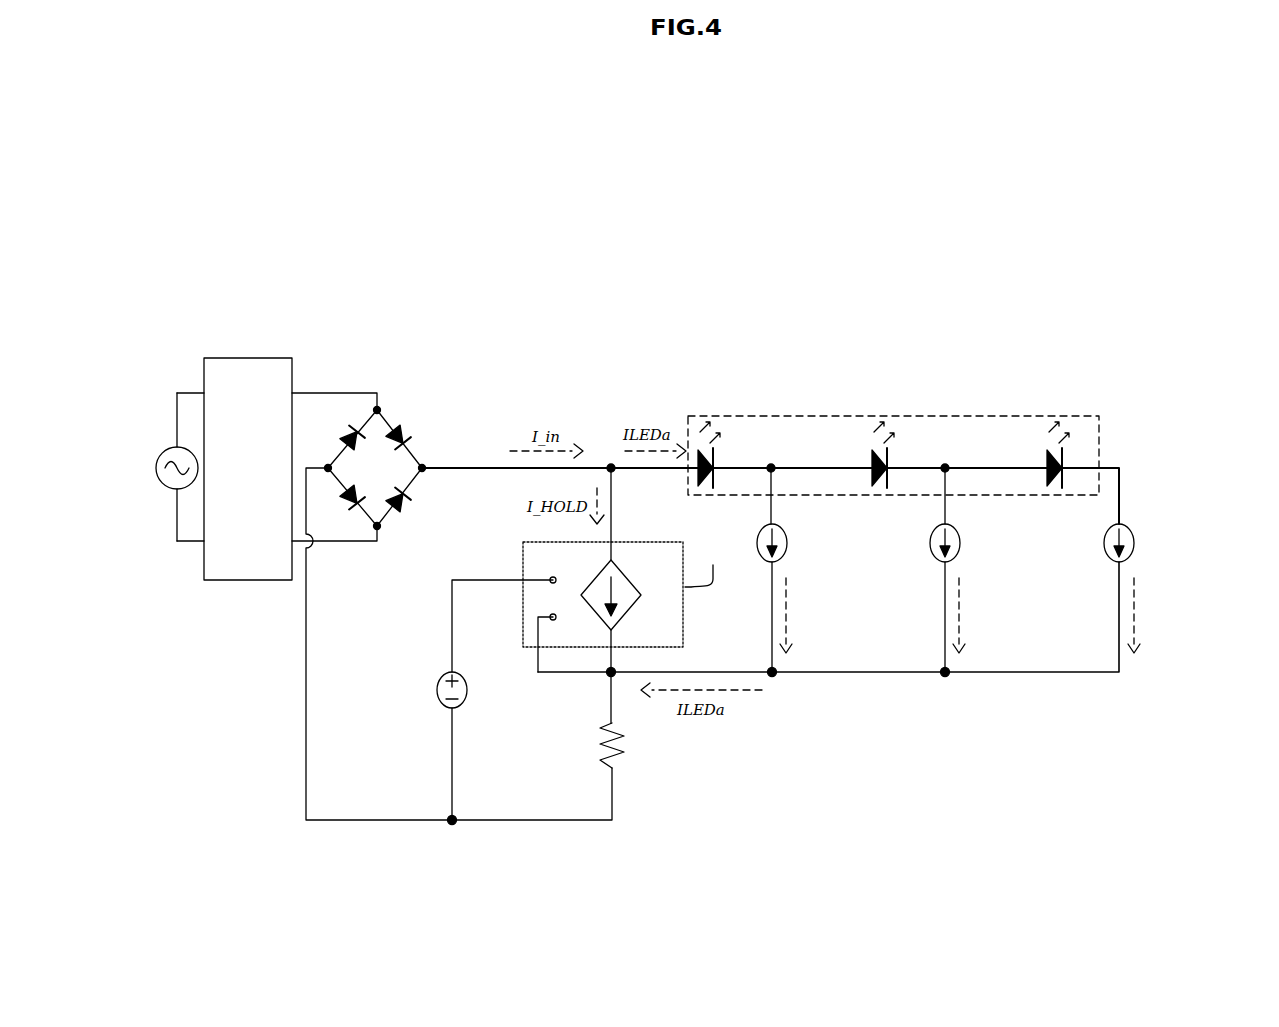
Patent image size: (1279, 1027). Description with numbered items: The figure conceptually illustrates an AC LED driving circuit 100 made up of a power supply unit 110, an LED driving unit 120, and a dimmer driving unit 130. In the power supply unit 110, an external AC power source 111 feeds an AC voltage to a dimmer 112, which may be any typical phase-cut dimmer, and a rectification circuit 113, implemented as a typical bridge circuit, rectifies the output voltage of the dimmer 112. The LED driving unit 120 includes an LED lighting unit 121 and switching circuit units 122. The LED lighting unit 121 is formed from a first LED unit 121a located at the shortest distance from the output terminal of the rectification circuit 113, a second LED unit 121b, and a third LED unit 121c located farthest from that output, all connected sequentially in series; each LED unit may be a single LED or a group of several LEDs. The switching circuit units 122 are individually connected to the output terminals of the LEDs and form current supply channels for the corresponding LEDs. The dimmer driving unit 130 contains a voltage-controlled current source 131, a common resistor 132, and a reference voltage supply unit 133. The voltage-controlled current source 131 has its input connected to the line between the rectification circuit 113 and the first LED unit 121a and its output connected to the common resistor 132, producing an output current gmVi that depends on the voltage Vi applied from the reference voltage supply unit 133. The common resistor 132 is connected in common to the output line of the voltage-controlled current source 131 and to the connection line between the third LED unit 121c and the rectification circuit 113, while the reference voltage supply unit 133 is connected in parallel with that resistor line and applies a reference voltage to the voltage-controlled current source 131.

The AC LED driving circuit 100 is at (172, 115).
The power supply unit 110 is at (240, 312).
The AC power source 111 is at (157, 486).
The dimmer 112 is at (270, 357).
The rectification circuit 113 is at (380, 409).
The LED driving unit 120 is at (1134, 432).
The LED lighting unit 121 is at (973, 416).
The first LED unit 121a is at (713, 460).
The second LED unit 121b is at (887, 460).
The third LED unit 121c is at (1062, 460).
The switching circuit unit 122 is at (787, 540).
The dimmer driving unit 130 is at (495, 557).
The voltage-controlled current source (VCCS) 131 is at (524, 605).
The common resistor 132 is at (613, 763).
The reference voltage supply unit 133 is at (440, 702).